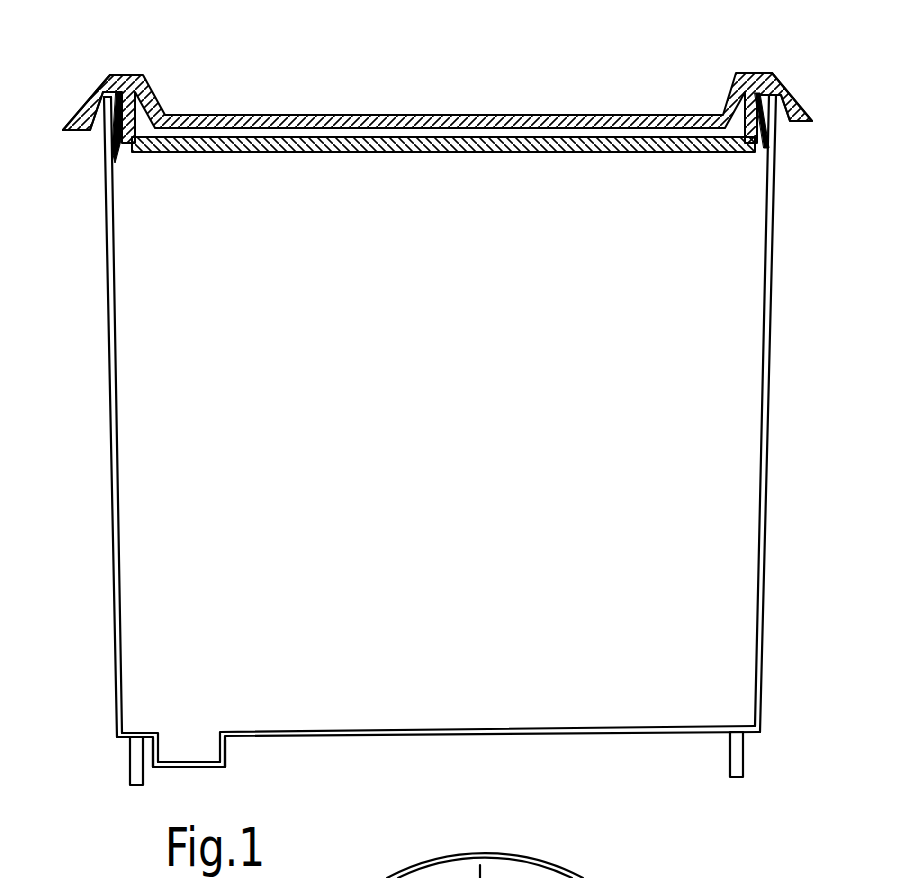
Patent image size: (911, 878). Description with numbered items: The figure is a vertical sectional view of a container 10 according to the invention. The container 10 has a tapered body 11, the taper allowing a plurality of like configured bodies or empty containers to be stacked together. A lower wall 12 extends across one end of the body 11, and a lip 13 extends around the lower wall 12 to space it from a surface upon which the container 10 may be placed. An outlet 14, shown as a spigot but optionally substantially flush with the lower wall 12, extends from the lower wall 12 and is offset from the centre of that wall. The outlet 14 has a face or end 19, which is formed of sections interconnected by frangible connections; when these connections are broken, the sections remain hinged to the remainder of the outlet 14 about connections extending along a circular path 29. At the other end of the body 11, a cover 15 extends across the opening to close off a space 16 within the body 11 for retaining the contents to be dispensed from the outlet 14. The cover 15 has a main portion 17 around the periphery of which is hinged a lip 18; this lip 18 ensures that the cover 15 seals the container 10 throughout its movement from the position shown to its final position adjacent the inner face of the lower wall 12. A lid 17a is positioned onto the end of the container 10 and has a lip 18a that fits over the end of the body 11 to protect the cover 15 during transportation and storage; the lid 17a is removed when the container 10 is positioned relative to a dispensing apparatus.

The container 10 is at (570, 101).
The tapered body 11 is at (766, 474).
The lower wall 12 is at (552, 737).
The lip 13 is at (130, 767).
The outlet 14 is at (207, 752).
The cover 15 is at (502, 162).
The space 16 is at (447, 466).
The main portion 17 is at (368, 157).
The lid 17a is at (250, 127).
The lip 18 is at (117, 152).
The lip 18a is at (792, 103).
The end 19 is at (180, 757).
The circular path 29 is at (533, 862).